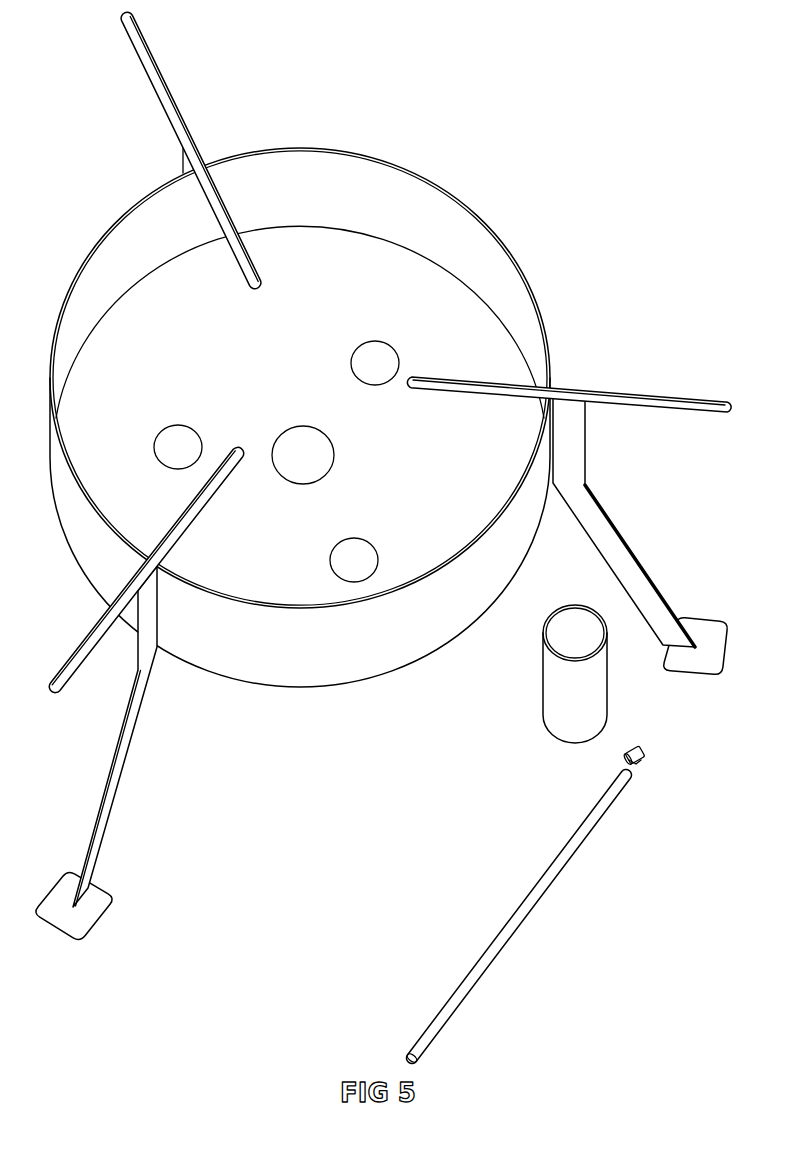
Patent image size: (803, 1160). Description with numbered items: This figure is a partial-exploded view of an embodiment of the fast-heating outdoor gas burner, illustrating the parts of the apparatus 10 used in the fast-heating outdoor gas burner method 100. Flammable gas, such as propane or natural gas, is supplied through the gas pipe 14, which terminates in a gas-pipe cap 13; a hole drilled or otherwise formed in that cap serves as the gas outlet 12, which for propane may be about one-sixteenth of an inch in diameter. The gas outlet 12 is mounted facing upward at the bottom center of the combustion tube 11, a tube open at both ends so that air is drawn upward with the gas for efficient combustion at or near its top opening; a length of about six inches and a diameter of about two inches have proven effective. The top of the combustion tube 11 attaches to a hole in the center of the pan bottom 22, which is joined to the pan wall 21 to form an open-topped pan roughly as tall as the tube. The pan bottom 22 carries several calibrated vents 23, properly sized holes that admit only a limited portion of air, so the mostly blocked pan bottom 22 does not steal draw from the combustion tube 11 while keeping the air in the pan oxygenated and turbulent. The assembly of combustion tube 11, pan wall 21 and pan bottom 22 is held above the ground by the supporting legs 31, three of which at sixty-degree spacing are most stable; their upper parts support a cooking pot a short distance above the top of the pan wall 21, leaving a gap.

The fast-heating outdoor gas burner method 100 is at (655, 130).
The apparatus 10 is at (648, 200).
The combustion tube 11 is at (555, 708).
The gas outlet 12 is at (641, 751).
The gas-pipe cap 13 is at (639, 763).
The gas pipe 14 is at (539, 890).
The pan wall 21 is at (283, 676).
The pan bottom 22 is at (293, 538).
The calibrated vents 23 is at (172, 446).
The supporting legs 31 is at (187, 146).